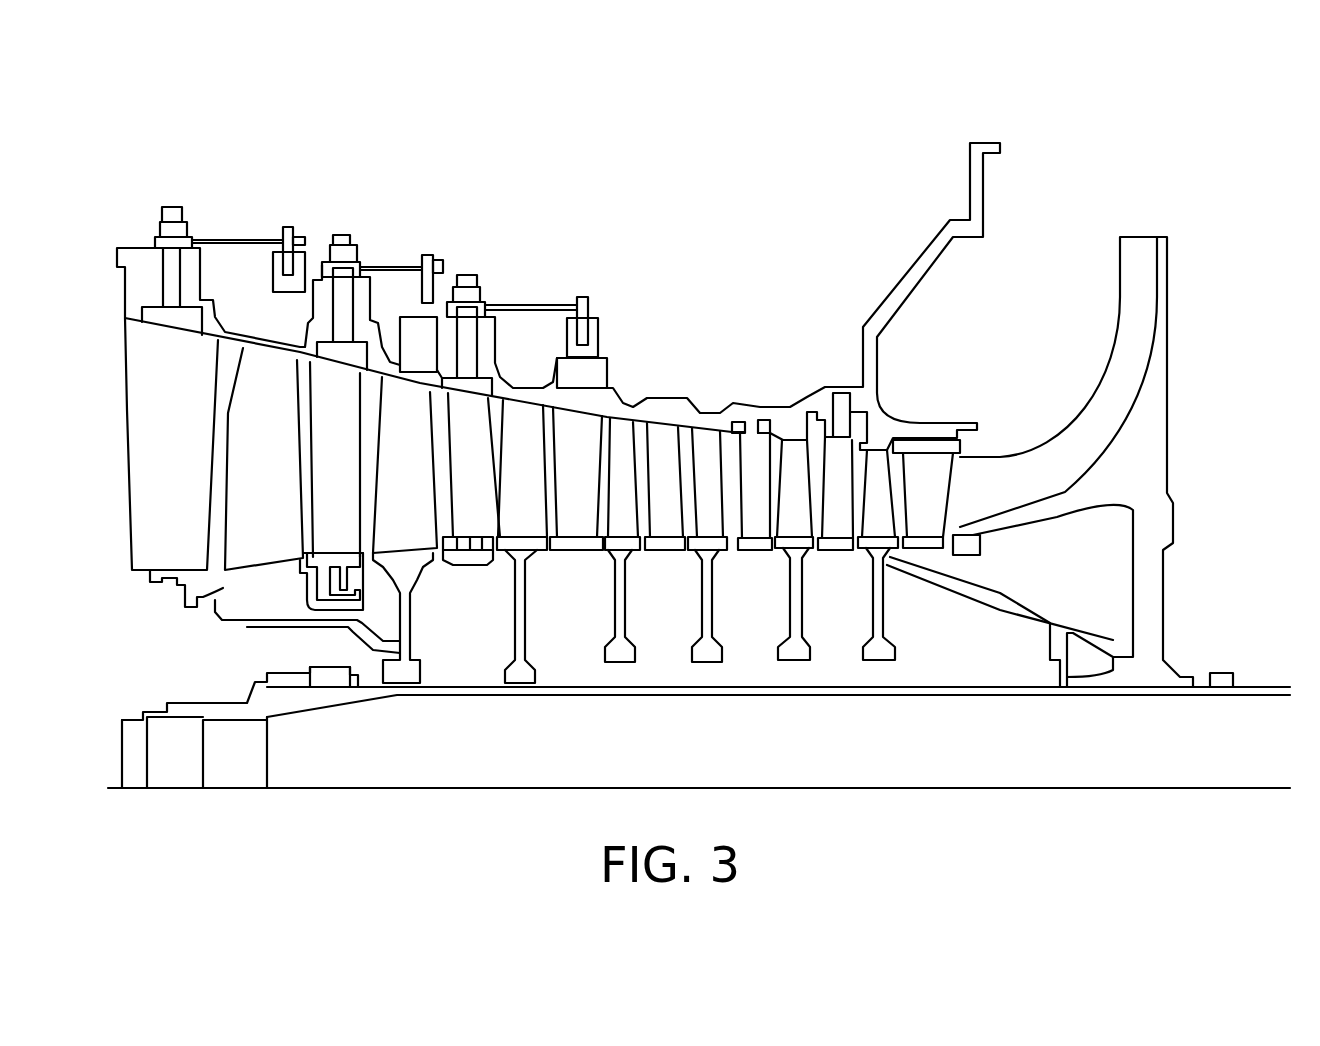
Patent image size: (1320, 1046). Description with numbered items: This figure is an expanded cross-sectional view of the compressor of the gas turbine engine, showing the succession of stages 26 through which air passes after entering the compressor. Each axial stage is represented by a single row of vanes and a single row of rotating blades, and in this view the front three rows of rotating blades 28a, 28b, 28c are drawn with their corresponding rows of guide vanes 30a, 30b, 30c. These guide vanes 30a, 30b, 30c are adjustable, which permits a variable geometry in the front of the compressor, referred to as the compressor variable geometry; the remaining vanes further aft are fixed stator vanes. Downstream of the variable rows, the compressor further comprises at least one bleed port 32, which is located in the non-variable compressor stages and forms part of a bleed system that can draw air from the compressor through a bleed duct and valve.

The stages 26 is at (832, 136).
The first row of rotating blades 28a is at (293, 527).
The second row of rotating blades 28b is at (445, 512).
The third row of rotating blades 28c is at (537, 477).
The adjustable guide vanes 30a is at (132, 445).
The adjustable guide vanes 30b is at (333, 512).
The adjustable guide vanes 30c is at (475, 512).
The bleed port 32 is at (810, 390).